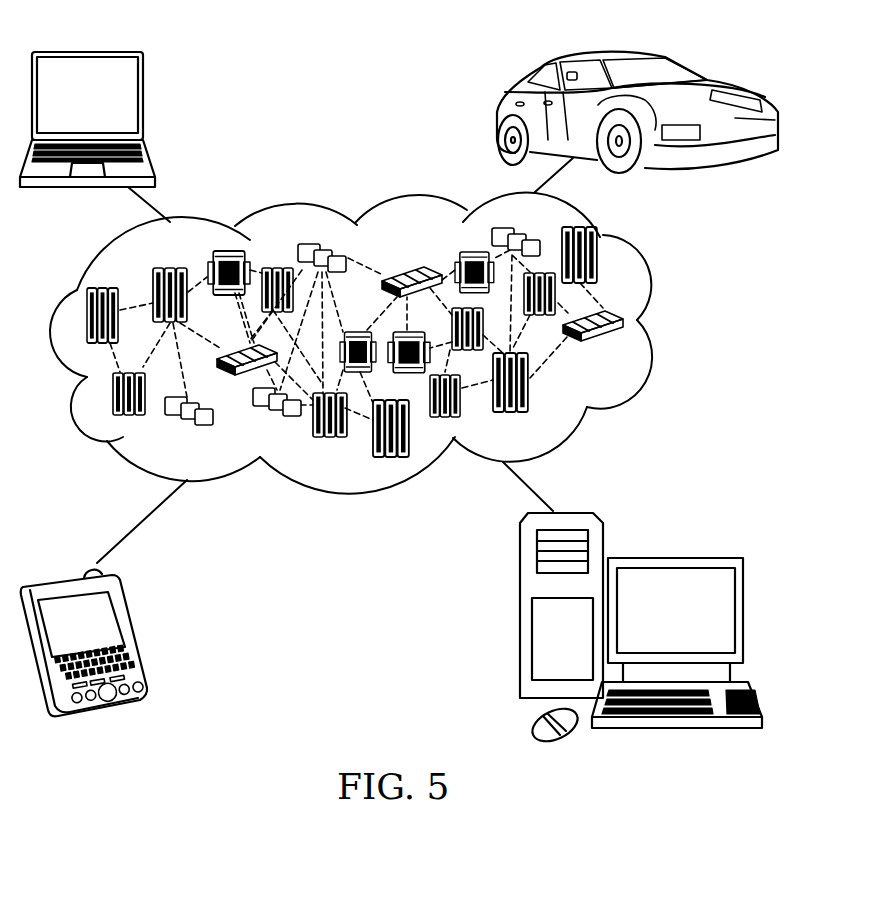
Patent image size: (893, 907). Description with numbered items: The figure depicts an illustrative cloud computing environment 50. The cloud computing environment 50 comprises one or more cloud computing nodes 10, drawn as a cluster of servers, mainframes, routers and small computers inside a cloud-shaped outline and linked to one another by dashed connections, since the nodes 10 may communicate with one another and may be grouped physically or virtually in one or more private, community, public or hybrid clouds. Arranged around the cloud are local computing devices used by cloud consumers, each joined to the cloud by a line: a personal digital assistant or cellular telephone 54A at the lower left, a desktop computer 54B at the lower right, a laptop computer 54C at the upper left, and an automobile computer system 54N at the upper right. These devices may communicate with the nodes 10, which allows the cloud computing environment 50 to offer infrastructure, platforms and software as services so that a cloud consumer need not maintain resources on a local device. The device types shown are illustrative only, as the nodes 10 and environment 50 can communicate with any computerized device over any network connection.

The cloud computing environment 50 is at (673, 323).
The cloud computing nodes 10 is at (634, 351).
The personal digital assistant or cellular telephone 54A is at (133, 637).
The desktop computer 54B is at (673, 558).
The laptop computer 54C is at (145, 102).
The automobile computer system 54N is at (498, 115).